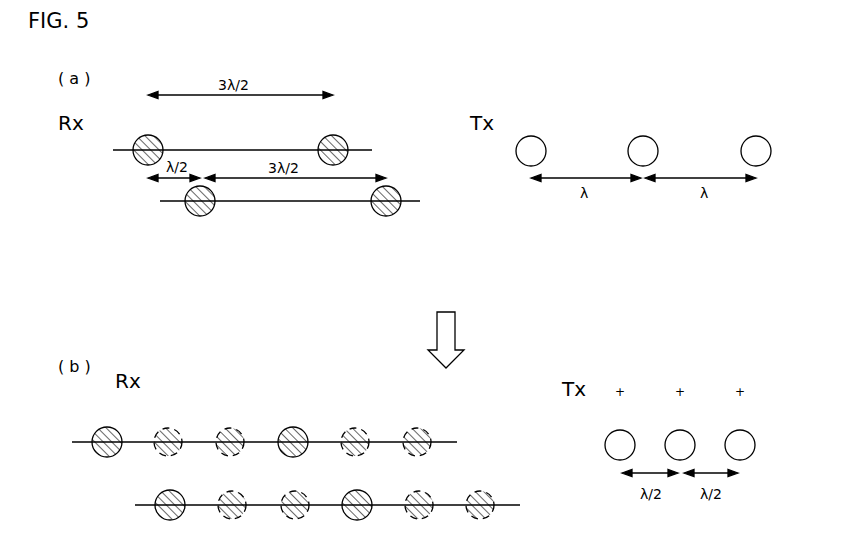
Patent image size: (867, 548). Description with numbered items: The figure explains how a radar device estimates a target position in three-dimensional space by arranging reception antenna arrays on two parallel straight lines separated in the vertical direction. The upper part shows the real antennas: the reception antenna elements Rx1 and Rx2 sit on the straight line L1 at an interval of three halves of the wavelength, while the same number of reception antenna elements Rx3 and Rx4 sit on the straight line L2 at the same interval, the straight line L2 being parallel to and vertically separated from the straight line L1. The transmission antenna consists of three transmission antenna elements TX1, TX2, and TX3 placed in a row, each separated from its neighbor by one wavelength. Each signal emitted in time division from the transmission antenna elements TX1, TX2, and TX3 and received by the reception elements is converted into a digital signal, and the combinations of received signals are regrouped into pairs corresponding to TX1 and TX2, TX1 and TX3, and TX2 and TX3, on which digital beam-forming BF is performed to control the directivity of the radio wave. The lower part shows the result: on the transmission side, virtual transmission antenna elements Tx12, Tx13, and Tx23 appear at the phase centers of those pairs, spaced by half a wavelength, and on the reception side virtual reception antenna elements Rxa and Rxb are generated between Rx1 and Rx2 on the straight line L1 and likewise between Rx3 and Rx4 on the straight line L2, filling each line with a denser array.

The reception antenna element Rx1 is at (127, 286).
The reception antenna element Rx2 is at (313, 286).
The reception antenna element Rx3 is at (185, 353).
The reception antenna element Rx4 is at (371, 353).
The virtual reception antenna element Rxa is at (305, 481).
The virtual reception antenna element Rxb is at (367, 481).
The transmission antenna element TX1 is at (604, 245).
The transmission antenna element TX2 is at (680, 270).
The transmission antenna element TX3 is at (719, 270).
The virtual transmission antenna element Tx12 is at (618, 461).
The virtual transmission antenna element Tx13 is at (678, 461).
The virtual transmission antenna element Tx23 is at (738, 461).
The straight line L1 is at (254, 300).
The straight line L2 is at (314, 356).
The digital beam-forming BF is at (446, 329).